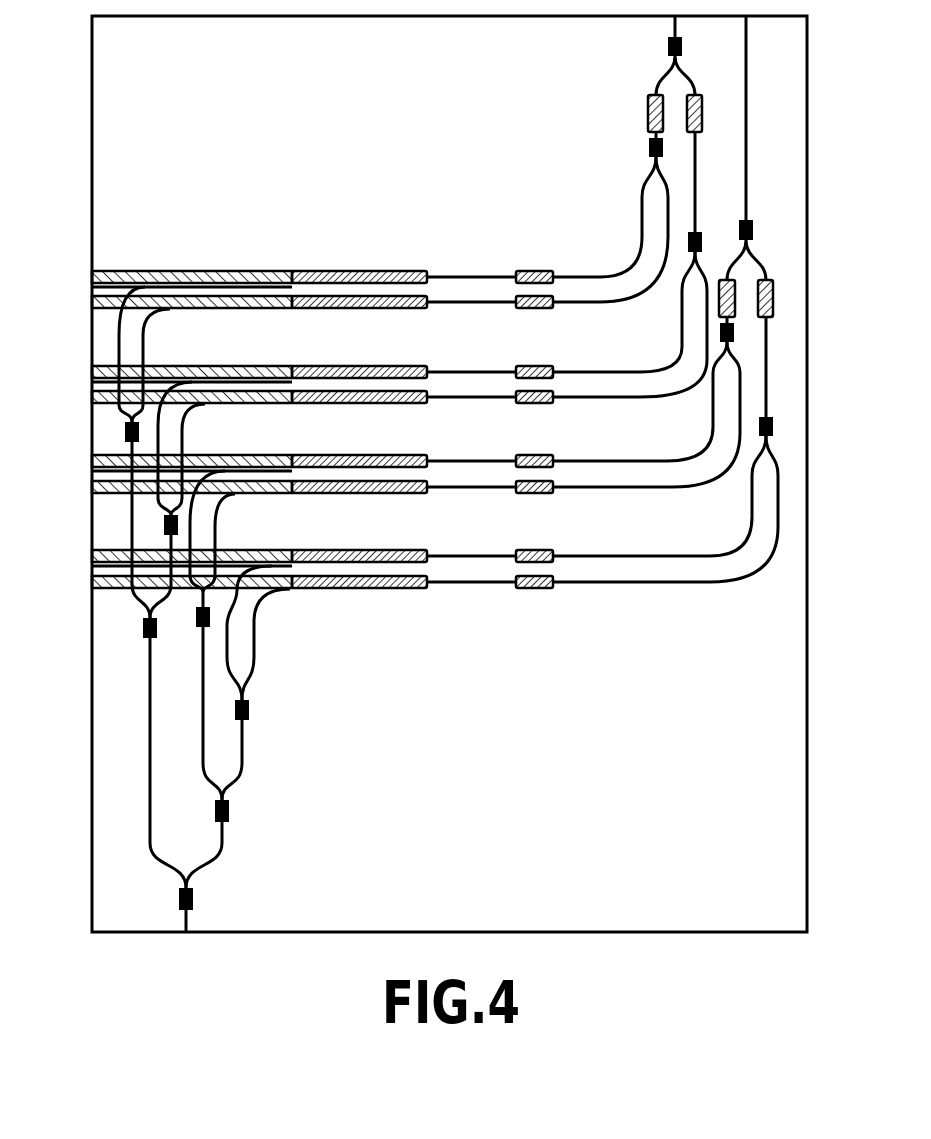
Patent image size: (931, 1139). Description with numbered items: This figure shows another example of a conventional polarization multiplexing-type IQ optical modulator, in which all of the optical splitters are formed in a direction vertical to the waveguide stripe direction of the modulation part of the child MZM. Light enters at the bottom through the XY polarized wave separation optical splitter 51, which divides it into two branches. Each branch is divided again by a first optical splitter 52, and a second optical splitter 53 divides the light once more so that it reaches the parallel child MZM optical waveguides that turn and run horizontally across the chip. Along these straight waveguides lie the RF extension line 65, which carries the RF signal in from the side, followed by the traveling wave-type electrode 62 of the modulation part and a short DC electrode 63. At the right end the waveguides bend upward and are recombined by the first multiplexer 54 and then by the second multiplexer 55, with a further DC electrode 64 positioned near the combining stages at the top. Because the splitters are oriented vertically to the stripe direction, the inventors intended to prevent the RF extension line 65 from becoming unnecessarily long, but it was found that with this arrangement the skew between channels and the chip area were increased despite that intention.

The XY polarized wave separation optical splitter 51 is at (193, 898).
The first optical splitter 52 is at (145, 630).
The second optical splitter 53 is at (249, 709).
The first multiplexer 54 is at (773, 426).
The second multiplexer 55 is at (753, 230).
The traveling wave-type electrode 62 is at (360, 270).
The DC electrode 63 is at (533, 270).
The DC electrode 64 is at (655, 116).
The RF extension line 65 is at (152, 270).